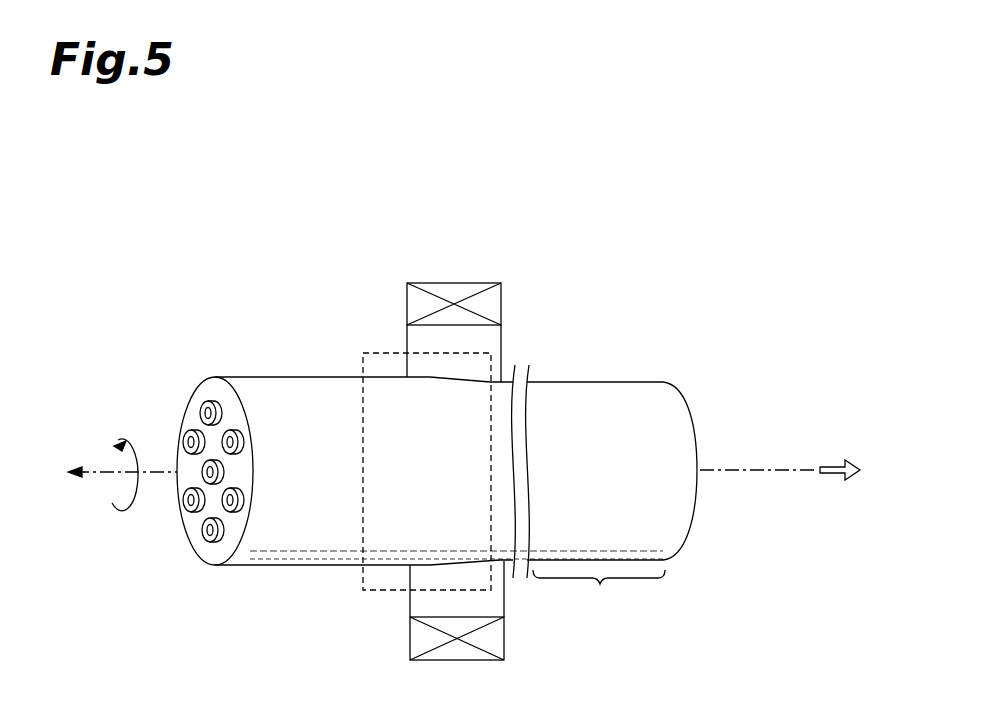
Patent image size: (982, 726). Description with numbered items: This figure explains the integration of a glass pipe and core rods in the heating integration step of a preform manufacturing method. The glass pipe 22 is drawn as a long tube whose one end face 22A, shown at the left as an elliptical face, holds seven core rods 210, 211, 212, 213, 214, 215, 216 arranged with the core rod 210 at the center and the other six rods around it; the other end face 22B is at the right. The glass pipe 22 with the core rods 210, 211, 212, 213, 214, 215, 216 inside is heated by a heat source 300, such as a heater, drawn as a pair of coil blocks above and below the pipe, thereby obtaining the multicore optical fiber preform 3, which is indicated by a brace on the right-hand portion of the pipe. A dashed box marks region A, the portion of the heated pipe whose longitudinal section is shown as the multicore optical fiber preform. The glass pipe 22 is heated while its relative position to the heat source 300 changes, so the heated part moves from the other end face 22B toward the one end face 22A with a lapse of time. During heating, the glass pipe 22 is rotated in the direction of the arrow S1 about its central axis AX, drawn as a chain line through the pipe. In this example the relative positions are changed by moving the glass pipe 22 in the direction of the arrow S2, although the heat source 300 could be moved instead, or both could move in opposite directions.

The glass pipe 22 is at (336, 566).
The one end face 22A is at (208, 377).
The other end face 22B is at (693, 418).
The heat source 300 is at (482, 283).
The region A is at (380, 353).
The multicore optical fiber preform 3 is at (599, 592).
The central axis AX is at (424, 475).
The arrow S1 is at (114, 445).
The arrow S2 is at (833, 478).
The core rod 210 is at (219, 471).
The core rod 211 is at (233, 438).
The core rod 212 is at (233, 512).
The core rod 213 is at (208, 538).
The core rod 214 is at (188, 508).
The core rod 215 is at (187, 437).
The core rod 216 is at (204, 410).